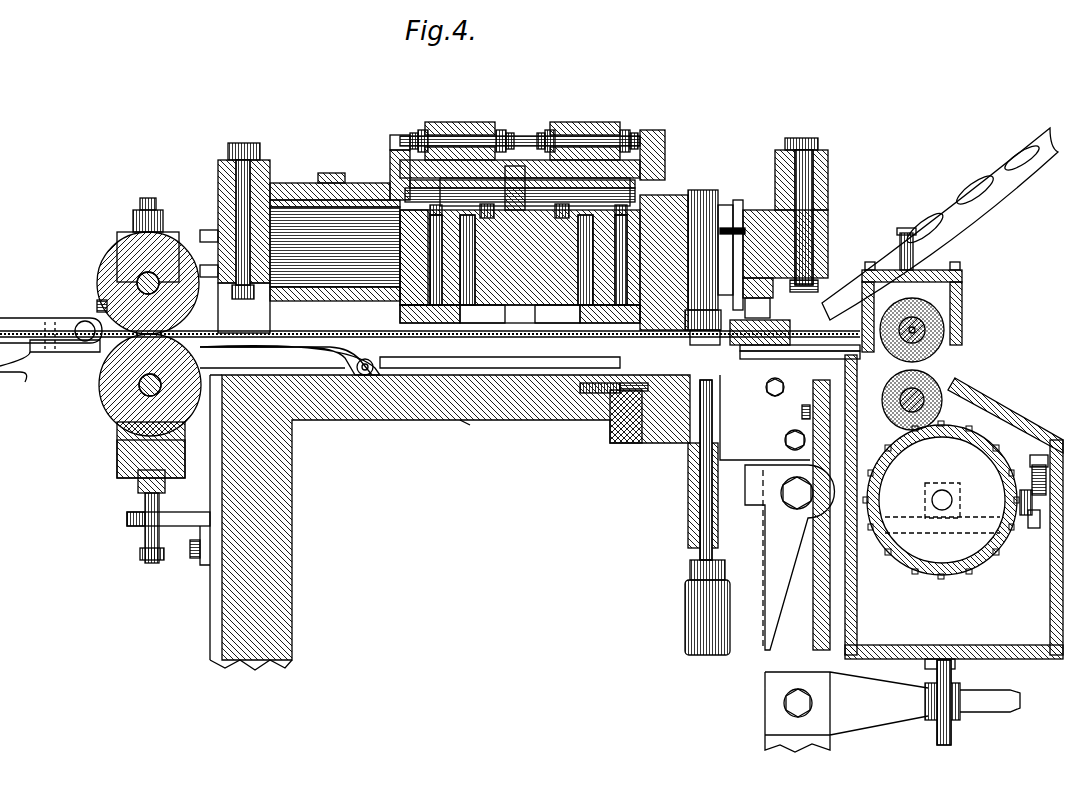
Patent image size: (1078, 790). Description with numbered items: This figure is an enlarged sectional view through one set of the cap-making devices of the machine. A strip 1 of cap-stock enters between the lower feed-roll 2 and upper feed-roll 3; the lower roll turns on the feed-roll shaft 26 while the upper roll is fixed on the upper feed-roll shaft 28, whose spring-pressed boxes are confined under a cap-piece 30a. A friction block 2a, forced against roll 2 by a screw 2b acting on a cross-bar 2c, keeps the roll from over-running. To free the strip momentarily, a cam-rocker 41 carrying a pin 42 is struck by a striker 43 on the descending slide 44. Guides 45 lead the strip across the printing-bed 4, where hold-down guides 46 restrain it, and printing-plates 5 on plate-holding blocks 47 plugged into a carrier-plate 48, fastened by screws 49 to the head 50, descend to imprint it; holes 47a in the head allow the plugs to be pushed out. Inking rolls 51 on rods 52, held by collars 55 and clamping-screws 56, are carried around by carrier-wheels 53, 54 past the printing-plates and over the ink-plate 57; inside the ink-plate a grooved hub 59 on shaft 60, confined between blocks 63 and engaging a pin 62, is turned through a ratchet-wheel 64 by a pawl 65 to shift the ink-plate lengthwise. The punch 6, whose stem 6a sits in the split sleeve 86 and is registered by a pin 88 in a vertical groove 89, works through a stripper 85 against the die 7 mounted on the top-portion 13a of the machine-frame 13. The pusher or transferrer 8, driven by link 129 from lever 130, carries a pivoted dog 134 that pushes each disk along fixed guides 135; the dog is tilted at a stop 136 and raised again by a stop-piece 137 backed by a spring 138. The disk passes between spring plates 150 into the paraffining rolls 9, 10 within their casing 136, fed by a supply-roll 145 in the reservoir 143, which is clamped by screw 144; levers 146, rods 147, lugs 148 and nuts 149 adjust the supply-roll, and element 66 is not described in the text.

The strip of cap-stock 1 is at (65, 318).
The lower feed-roll 2 is at (100, 405).
The friction block 2a is at (115, 458).
The screw 2b is at (140, 532).
The cross-bar 2c is at (138, 484).
The upper feed-roll 3 is at (105, 250).
The printing-bed 4 is at (500, 360).
The printing-plate 5 is at (516, 316).
The disk-cutting punch 6 is at (690, 358).
The punch stem 6a is at (722, 205).
The die 7 is at (745, 330).
The pusher or transferrer 8 is at (780, 360).
The upper paraffining roll 9 is at (945, 318).
The lower paraffining roll 10 is at (962, 380).
The machine-frame 13 is at (292, 530).
The top-portion of machine-frame 13a is at (515, 418).
The feed-roll shaft 26 is at (120, 425).
The upper feed-roll shaft 28 is at (105, 270).
The cap-piece 30a is at (125, 232).
The cam-rocker 41 is at (97, 306).
The pin 42 is at (244, 308).
The striker 43 is at (205, 232).
The vertically-reciprocating slide 44 is at (270, 360).
The guide 45 is at (255, 340).
The hold-down guide 46 is at (520, 314).
The plate-holding block 47 is at (528, 260).
The hole in head 47a is at (578, 244).
The carrier-plate 48 is at (512, 300).
The screw 49 is at (638, 248).
The head 50 is at (670, 195).
The inking roll 51 is at (432, 122).
The rod or arbor 52 is at (530, 135).
The carrier-wheel 53 is at (665, 160).
The carrier-wheel 54 is at (390, 165).
The collar 55 is at (423, 130).
The clamping-screw 56 is at (412, 134).
The ink-plate 57 is at (660, 132).
The hub 59 is at (535, 187).
The shaft 60 is at (520, 185).
The pin 62 is at (518, 178).
The block 63 is at (480, 210).
The ratchet-wheel 64 is at (388, 182).
The pawl 65 is at (390, 146).
The lug 66 is at (325, 172).
The stripper 85 is at (759, 303).
The sleeve 86 is at (702, 190).
The pin 88 is at (738, 200).
The vertical groove 89 is at (740, 210).
The link 129 is at (350, 344).
The lever 130 is at (25, 372).
The dog 134 is at (800, 345).
The fixed guides 135 is at (800, 339).
The casing 136 is at (962, 282).
The stop-piece 137 is at (612, 420).
The expanding spiral spring 138 is at (590, 395).
The reservoir 143 is at (1000, 660).
The supporting and clamping screw 144 is at (952, 735).
The supply-roll 145 is at (990, 560).
The lever 146 is at (1018, 518).
The screw-threaded rod 147 is at (1034, 531).
The lug 148 is at (1040, 465).
The nut 149 is at (1032, 455).
The spring plate 150 is at (891, 367).